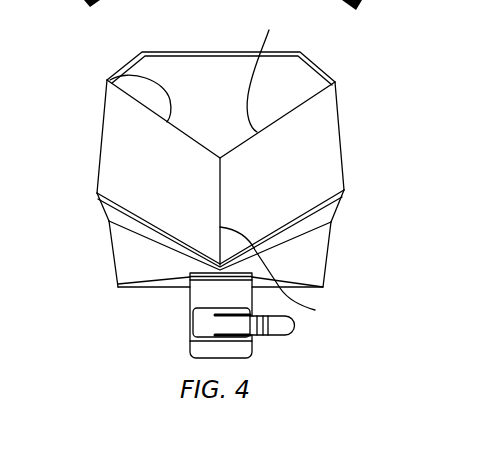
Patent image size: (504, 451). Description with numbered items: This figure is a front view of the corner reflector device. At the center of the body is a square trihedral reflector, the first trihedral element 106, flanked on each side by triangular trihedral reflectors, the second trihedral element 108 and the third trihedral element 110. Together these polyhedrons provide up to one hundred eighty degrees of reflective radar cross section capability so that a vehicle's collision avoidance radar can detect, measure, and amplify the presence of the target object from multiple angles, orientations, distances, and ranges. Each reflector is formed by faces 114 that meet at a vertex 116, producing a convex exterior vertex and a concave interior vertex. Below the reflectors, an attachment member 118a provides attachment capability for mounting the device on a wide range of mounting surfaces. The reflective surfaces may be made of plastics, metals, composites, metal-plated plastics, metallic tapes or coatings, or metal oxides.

The first trihedral element 106 is at (366, 113).
The second trihedral element 108 is at (362, 246).
The third trihedral element 110 is at (88, 267).
The face 114 is at (108, 132).
The vertex 116 is at (118, 72).
The attachment member 118a is at (192, 343).